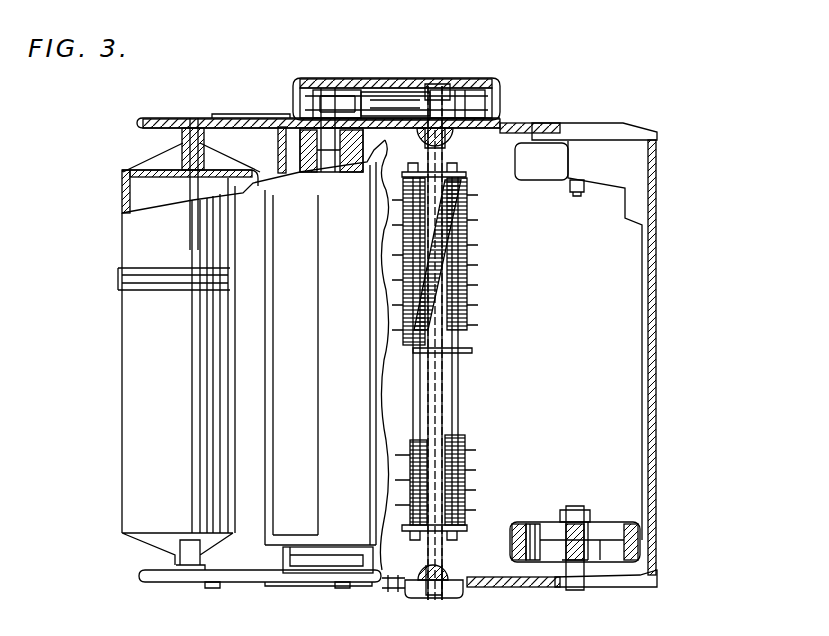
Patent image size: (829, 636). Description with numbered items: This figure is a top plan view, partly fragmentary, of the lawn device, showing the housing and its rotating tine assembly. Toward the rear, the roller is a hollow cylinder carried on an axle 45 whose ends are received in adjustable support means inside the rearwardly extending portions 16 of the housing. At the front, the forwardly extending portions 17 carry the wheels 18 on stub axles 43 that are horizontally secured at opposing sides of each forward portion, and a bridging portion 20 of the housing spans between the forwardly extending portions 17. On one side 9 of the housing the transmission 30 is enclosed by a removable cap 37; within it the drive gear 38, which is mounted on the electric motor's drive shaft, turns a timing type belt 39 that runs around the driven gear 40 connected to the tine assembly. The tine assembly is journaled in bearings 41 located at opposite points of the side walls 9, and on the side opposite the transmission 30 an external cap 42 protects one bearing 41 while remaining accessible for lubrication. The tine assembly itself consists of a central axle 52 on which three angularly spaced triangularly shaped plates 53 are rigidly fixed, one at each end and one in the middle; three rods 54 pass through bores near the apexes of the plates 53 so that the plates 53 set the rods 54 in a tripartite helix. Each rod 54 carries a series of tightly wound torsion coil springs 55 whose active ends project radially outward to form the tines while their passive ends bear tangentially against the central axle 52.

The side wall 9 is at (533, 120).
The rearwardly extending portion 16 is at (143, 118).
The forwardly extending portion 17 is at (637, 124).
The wheel 18 is at (551, 165).
The bridging portion 20 is at (657, 490).
The transmission 30 is at (386, 68).
The cap 37 is at (430, 80).
The drive gear 38 is at (353, 88).
The timing type belt 39 is at (372, 100).
The driven gear 40 is at (478, 80).
The bearing 41 is at (458, 140).
The cap 42 is at (420, 600).
The stub axle 43 is at (572, 592).
The axle 45 is at (185, 142).
The central axle 52 is at (443, 553).
The triangularly shaped plate 53 is at (467, 175).
The rod 54 is at (463, 392).
The torsion coil spring 55 is at (470, 291).